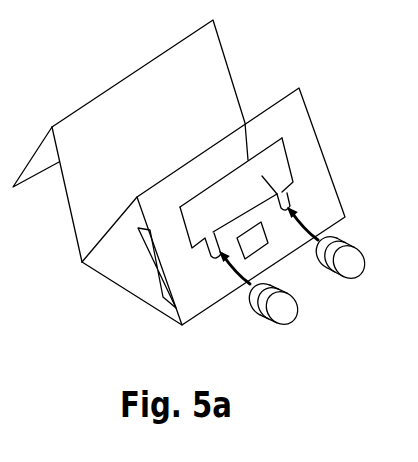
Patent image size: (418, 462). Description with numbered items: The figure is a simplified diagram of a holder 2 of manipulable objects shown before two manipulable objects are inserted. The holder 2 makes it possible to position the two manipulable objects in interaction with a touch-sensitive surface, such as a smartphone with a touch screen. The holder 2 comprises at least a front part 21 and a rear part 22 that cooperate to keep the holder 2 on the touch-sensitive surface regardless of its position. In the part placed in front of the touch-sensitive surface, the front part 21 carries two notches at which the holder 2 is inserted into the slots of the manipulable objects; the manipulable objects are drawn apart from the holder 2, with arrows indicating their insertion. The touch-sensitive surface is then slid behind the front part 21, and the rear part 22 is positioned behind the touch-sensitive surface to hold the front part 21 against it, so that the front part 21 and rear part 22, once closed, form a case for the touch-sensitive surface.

The holder of manipulable objects 2 is at (306, 108).
The rear part 22 is at (72, 222).
The front part 21 is at (178, 313).